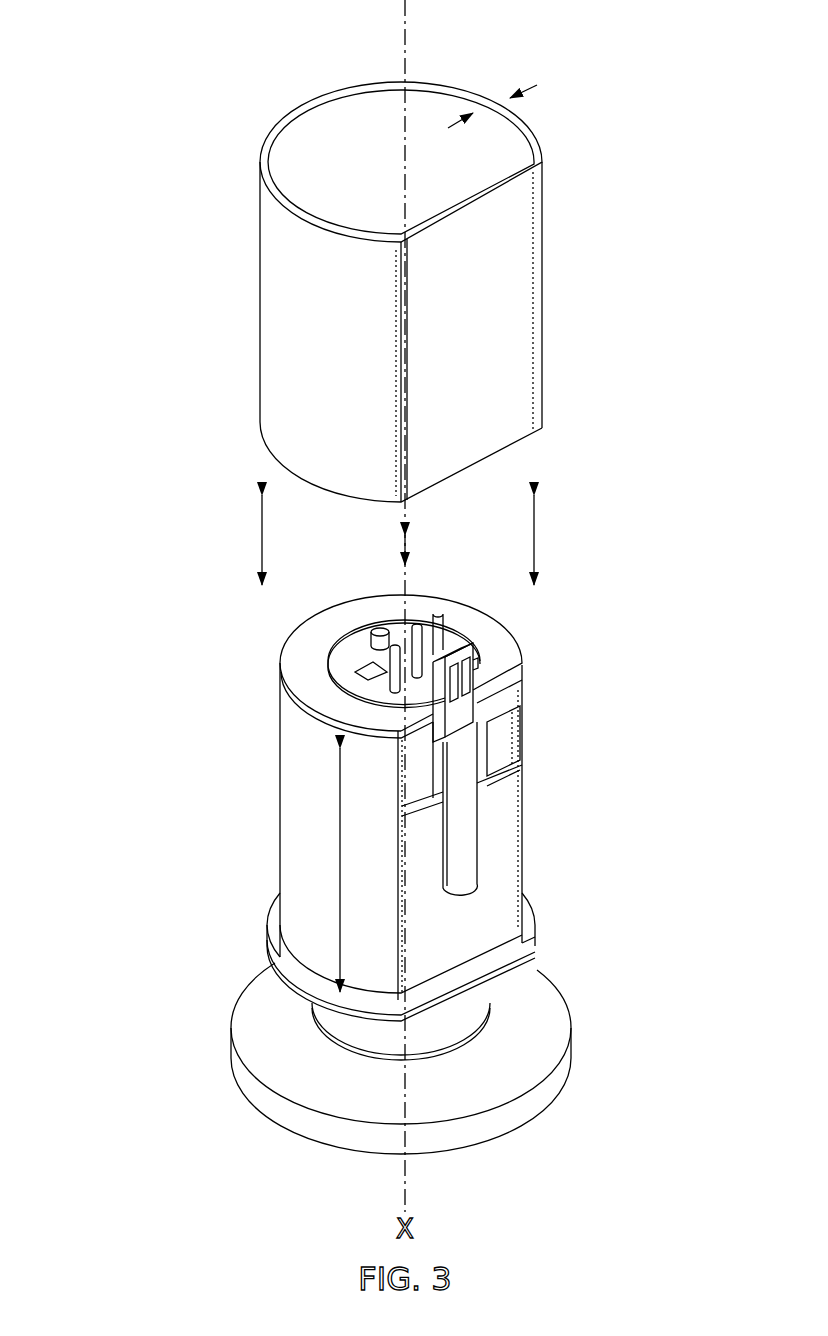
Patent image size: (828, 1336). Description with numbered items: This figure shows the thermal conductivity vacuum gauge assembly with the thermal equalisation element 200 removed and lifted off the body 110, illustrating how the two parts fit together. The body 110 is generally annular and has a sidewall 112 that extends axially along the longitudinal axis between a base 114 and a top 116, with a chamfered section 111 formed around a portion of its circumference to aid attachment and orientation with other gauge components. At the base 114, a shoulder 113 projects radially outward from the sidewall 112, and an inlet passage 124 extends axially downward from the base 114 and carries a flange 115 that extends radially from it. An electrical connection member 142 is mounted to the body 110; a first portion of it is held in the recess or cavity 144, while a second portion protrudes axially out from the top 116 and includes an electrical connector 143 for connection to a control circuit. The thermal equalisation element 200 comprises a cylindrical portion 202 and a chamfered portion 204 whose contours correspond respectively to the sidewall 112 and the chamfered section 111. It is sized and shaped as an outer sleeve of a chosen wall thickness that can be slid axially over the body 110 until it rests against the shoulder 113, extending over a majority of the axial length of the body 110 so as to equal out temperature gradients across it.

The thermal equalisation element 200 is at (373, 285).
The cylindrical portion 202 is at (280, 292).
The chamfered portion 204 is at (510, 280).
The body 110 is at (375, 867).
The chamfered section 111 is at (497, 852).
The sidewall 112 is at (297, 768).
The shoulder 113 is at (525, 925).
The base 114 is at (267, 958).
The flange 115 is at (517, 1068).
The top 116 is at (297, 652).
The inlet passage 124 is at (470, 1020).
The electrical connection member 142 is at (498, 730).
The electrical connector 143 is at (477, 667).
The recess or cavity 144 is at (466, 754).